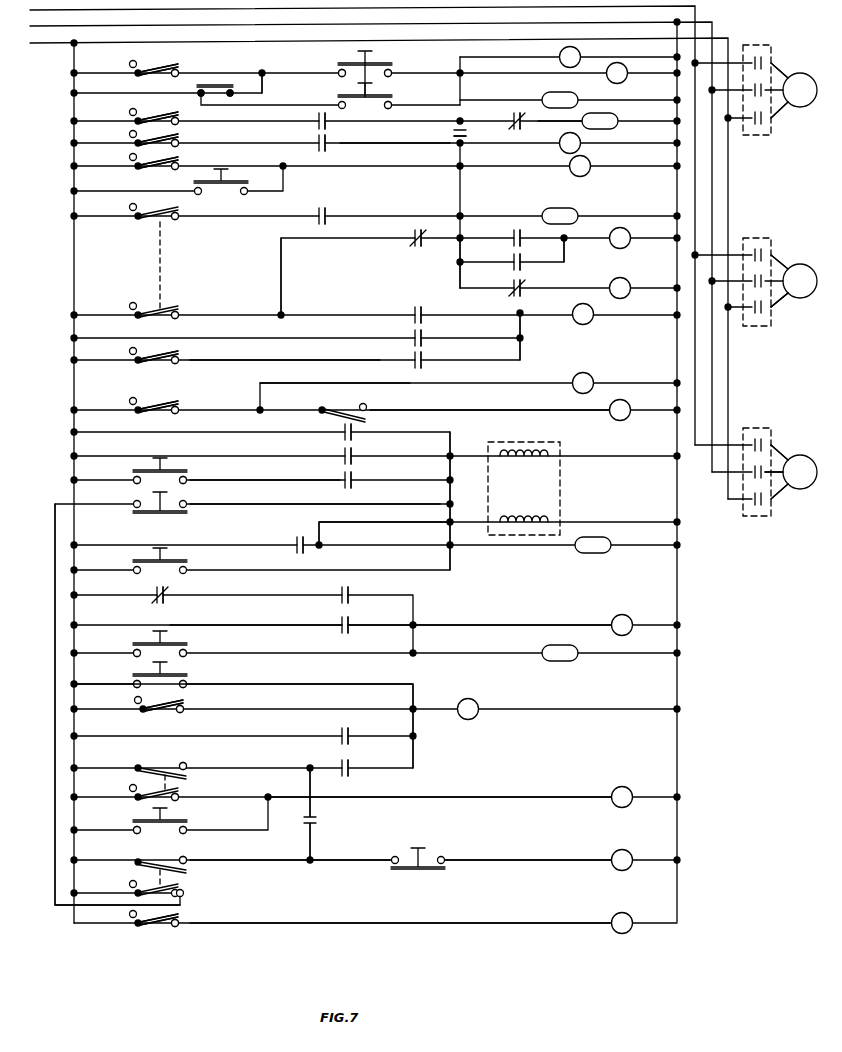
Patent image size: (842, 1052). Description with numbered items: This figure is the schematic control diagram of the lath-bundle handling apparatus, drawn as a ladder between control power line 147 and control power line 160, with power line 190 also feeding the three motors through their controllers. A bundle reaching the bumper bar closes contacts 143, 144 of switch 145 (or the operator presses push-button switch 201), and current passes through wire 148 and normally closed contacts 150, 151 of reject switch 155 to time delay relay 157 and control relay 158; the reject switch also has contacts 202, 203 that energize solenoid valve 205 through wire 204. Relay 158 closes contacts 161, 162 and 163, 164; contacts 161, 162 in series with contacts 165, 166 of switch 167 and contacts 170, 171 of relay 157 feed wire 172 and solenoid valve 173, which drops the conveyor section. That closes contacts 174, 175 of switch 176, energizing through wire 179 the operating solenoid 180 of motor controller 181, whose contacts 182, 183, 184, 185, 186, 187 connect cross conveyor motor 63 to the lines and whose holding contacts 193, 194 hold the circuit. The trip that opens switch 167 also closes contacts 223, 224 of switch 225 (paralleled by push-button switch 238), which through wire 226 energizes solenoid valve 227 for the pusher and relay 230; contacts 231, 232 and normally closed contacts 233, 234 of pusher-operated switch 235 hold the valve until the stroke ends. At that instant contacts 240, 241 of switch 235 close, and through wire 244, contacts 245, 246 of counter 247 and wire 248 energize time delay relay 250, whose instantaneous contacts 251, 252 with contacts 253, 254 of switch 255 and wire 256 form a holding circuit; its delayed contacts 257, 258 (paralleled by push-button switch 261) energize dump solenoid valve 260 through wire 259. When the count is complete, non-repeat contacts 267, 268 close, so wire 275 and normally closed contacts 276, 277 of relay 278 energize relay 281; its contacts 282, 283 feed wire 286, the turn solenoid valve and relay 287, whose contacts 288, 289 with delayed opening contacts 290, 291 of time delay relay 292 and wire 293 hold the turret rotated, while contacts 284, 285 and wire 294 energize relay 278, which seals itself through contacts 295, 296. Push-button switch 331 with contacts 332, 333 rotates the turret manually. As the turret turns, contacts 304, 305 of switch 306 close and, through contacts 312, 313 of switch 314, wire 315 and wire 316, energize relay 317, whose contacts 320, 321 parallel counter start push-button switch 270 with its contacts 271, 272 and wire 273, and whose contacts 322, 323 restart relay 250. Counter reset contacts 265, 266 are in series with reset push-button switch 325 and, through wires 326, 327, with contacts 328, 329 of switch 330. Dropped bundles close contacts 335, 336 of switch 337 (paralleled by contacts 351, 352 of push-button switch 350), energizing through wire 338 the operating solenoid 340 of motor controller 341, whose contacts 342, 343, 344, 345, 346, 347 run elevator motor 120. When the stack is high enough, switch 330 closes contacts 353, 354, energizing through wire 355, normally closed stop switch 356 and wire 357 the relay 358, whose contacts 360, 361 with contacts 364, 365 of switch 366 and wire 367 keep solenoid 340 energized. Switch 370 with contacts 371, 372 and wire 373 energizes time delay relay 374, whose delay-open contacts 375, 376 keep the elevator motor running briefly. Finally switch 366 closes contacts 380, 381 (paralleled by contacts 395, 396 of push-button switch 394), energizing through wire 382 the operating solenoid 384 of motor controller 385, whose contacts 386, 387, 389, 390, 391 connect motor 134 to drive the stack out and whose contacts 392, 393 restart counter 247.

The power line 190 is at (295, 9).
The control power line 160 is at (385, 28).
The control power line 147 is at (348, 45).
The contact 143 is at (128, 64).
The switch 145 is at (158, 66).
The contact 144 is at (182, 70).
The wire 148 is at (305, 64).
The contact 150 is at (342, 71).
The reject switch 155 is at (350, 58).
The contact 151 is at (380, 70).
The push-button switch 201 is at (222, 85).
The contact 202 is at (338, 102).
The contact 203 is at (387, 104).
The wire 204 is at (520, 96).
The solenoid valve 205 is at (557, 96).
The time delay relay 157 is at (580, 54).
The control relay 158 is at (620, 79).
The contact 165 is at (128, 112).
The switch 167 is at (160, 111).
The contact 166 is at (175, 120).
The contact 161 is at (317, 119).
The contact 162 is at (333, 119).
The contact 170 is at (514, 119).
The contact 171 is at (520, 121).
The wire 172 is at (560, 121).
The solenoid valve 173 is at (614, 123).
The holding contact 193 is at (455, 131).
The holding contact 194 is at (465, 134).
The contact 174 is at (128, 134).
The switch 176 is at (180, 136).
The contact 175 is at (177, 145).
The contact 163 is at (317, 139).
The contact 164 is at (333, 138).
The wire 179 is at (405, 147).
The operating solenoid 180 is at (560, 146).
The contact 223 is at (128, 158).
The switch 225 is at (136, 173).
The contact 224 is at (173, 170).
The push-button switch 238 is at (232, 178).
The relay 230 is at (588, 174).
The wire 226 is at (457, 193).
The contact 233 is at (128, 208).
The contact 234 is at (177, 213).
The contact 231 is at (316, 213).
The contact 232 is at (325, 212).
The solenoid valve 227 is at (556, 205).
The switch 235 is at (165, 255).
The contact 267 is at (410, 236).
The contact 268 is at (425, 236).
The wire 275 is at (456, 258).
The contact 284 is at (512, 237).
The contact 285 is at (522, 237).
The wire 294 is at (568, 250).
The relay 278 is at (620, 238).
The contact 295 is at (514, 262).
The contact 296 is at (522, 261).
The contact 276 is at (512, 287).
The contact 277 is at (524, 286).
The relay 281 is at (620, 288).
The wire 244 is at (283, 274).
The contact 240 is at (132, 309).
The contact 241 is at (180, 313).
The contact 245 is at (410, 311).
The contact 246 is at (424, 311).
The time delay relay 250 is at (591, 319).
The contact 322 is at (410, 334).
The contact 323 is at (424, 336).
The wire 248 is at (525, 343).
The switch 255 is at (162, 354).
The contact 254 is at (182, 357).
The contact 253 is at (132, 365).
The wire 256 is at (313, 361).
The contact 251 is at (410, 359).
The contact 252 is at (424, 358).
The time delay relay 292 is at (589, 375).
The wire 315 is at (329, 383).
The switch 314 is at (162, 401).
The contact 313 is at (179, 407).
The contact 312 is at (130, 414).
The contact 304 is at (318, 408).
The contact 305 is at (368, 405).
The switch 306 is at (320, 421).
The wire 316 is at (485, 409).
The relay 317 is at (623, 408).
The contact 392 is at (340, 436).
The contact 393 is at (357, 436).
The contact 320 is at (340, 459).
The contact 321 is at (355, 459).
The counter start push button switch 270 is at (178, 472).
The contact 271 is at (132, 482).
The contact 272 is at (189, 484).
The wire 273 is at (233, 484).
The reset contact 265 is at (340, 484).
The reset contact 266 is at (355, 484).
The reset counter 247 is at (545, 489).
The reset push button switch 325 is at (140, 510).
The wire 326 is at (237, 506).
The contact 257 is at (293, 540).
The contact 258 is at (290, 543).
The wire 259 is at (340, 527).
The push button switch 261 is at (135, 561).
The solenoid valve 260 is at (603, 550).
The contact 290 is at (152, 600).
The contact 291 is at (168, 602).
The wire 293 is at (235, 618).
The contact 288 is at (338, 601).
The contact 289 is at (353, 601).
The wire 286 is at (445, 625).
The relay 287 is at (636, 616).
The contact 332 is at (135, 647).
The push button switch 331 is at (173, 646).
The contact 333 is at (190, 652).
The contact 282 is at (338, 631).
The contact 283 is at (353, 631).
The push button switch 350 is at (140, 673).
The contact 352 is at (190, 679).
The contact 351 is at (132, 686).
The contact 335 is at (137, 712).
The contact 336 is at (190, 707).
The switch 337 is at (167, 711).
The wire 338 is at (415, 694).
The operating solenoid 340 is at (475, 703).
The contact 375 is at (340, 730).
The contact 376 is at (353, 732).
The contact 364 is at (135, 765).
The contact 365 is at (187, 763).
The switch 366 is at (190, 781).
The contact 360 is at (340, 763).
The contact 361 is at (353, 762).
The wire 367 is at (313, 783).
The contact 380 is at (133, 802).
The contact 381 is at (183, 800).
The wire 382 is at (470, 797).
The operating solenoid 384 is at (622, 788).
The push button switch 394 is at (173, 819).
The contact 395 is at (132, 832).
The contact 396 is at (188, 833).
The contact 353 is at (135, 861).
The contact 354 is at (190, 859).
The wire 355 is at (340, 864).
The elevator motor stop switch 356 is at (424, 855).
The wire 357 is at (495, 858).
The relay 358 is at (622, 848).
The contact 328 is at (133, 885).
The switch 330 is at (180, 874).
The contact 329 is at (185, 894).
The wire 327 is at (58, 913).
The contact 371 is at (130, 936).
The switch 370 is at (158, 925).
The contact 372 is at (179, 925).
The wire 373 is at (338, 925).
The time delay relay 374 is at (626, 930).
The cross conveyor motor 63 is at (792, 78).
The motor controller 181 is at (755, 44).
The contact 186 is at (745, 48).
The contact 187 is at (768, 48).
The contact 185 is at (775, 66).
The contact 184 is at (730, 90).
The contact 182 is at (750, 132).
The contact 183 is at (770, 132).
The elevator motor 120 is at (793, 276).
The motor controller 341 is at (760, 236).
The contact 346 is at (748, 254).
The contact 347 is at (768, 254).
The contact 345 is at (782, 264).
The contact 344 is at (777, 297).
The contact 342 is at (750, 319).
The contact 343 is at (773, 319).
The motor 134 is at (792, 489).
The motor controller 385 is at (767, 418).
The contact 390 is at (748, 430).
The contact 391 is at (774, 430).
The contact 389 is at (777, 450).
The contact 387 is at (736, 478).
The contact 386 is at (740, 514).